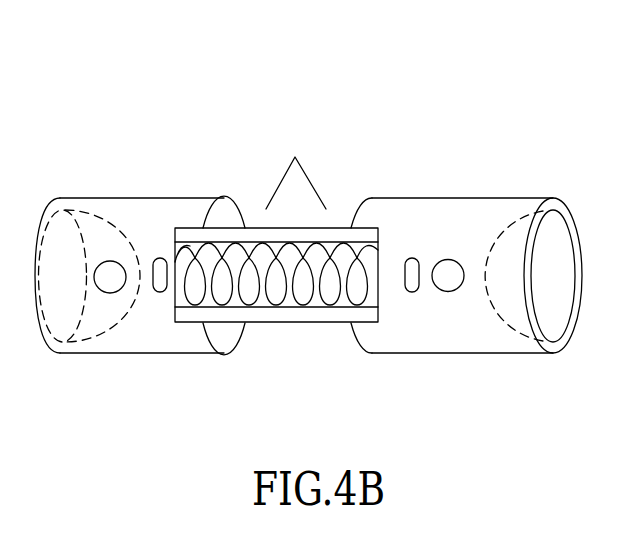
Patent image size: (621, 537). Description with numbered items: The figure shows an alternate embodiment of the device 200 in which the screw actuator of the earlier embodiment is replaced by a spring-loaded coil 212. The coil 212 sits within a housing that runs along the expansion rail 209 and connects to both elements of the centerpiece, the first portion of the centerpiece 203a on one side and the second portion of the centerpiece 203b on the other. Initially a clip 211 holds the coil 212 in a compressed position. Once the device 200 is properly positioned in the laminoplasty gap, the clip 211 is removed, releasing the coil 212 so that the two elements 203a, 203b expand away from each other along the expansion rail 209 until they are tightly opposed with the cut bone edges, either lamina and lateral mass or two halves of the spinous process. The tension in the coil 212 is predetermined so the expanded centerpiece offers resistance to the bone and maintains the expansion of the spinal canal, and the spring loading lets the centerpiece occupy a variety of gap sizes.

The device 200 is at (420, 117).
The first portion of the centerpiece 203a is at (138, 353).
The second portion of the centerpiece 203b is at (463, 353).
The expansion rail 209 is at (333, 228).
The clip 211 is at (278, 183).
The spring-loaded coil 212 is at (312, 298).